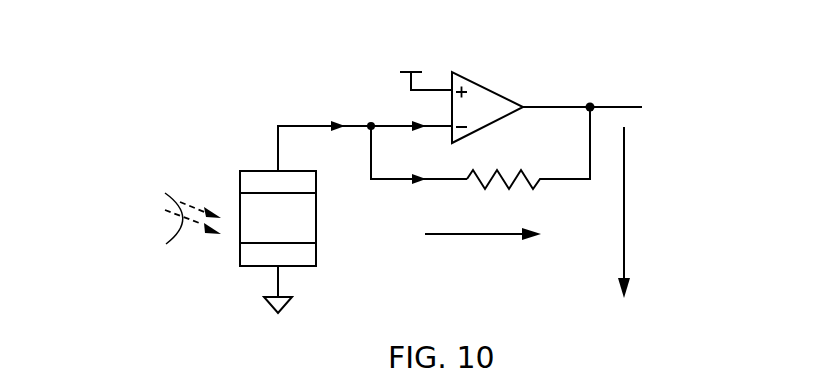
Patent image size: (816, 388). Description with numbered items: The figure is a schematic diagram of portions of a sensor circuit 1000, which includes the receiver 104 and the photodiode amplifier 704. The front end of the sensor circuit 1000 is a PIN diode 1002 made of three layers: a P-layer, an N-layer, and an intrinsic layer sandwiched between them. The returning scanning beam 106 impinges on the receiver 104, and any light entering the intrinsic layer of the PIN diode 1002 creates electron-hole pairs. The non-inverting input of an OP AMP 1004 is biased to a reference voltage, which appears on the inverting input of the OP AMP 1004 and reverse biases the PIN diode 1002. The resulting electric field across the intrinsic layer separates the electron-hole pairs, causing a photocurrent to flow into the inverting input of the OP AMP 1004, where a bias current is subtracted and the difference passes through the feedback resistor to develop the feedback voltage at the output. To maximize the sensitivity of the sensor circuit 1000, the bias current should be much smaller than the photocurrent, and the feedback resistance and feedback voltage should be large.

The sensor circuit 1000 is at (163, 54).
The receiver 104 is at (251, 131).
The PIN diode 1002 is at (256, 171).
The returning scanning beam 106 is at (175, 226).
The OP AMP 1004 is at (482, 93).
The photodiode amplifier 704 is at (585, 73).